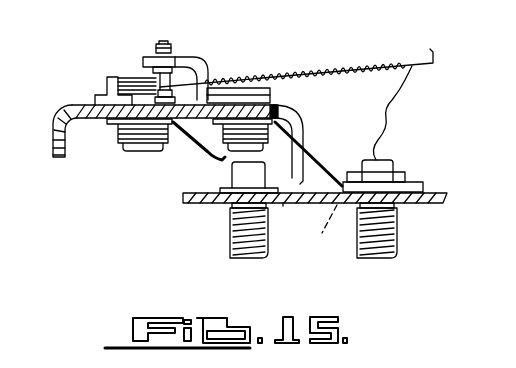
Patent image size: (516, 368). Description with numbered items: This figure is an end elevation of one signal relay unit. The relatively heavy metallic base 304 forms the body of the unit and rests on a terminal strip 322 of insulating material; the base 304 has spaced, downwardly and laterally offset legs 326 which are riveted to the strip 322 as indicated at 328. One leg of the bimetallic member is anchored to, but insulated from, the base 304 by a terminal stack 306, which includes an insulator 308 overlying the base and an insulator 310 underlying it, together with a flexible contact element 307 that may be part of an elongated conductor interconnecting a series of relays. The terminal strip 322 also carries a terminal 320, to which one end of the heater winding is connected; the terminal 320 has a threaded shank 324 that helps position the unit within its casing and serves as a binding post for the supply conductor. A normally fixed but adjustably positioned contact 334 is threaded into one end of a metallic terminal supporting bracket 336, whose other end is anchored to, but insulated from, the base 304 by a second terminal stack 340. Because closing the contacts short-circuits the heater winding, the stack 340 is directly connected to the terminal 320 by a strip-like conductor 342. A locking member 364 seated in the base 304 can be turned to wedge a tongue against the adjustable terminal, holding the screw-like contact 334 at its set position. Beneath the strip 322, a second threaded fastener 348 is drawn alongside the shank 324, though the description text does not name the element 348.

The base 304 is at (93, 127).
The terminal stack 306 is at (128, 78).
The flexible contact element 307 is at (182, 147).
The insulator 308 is at (274, 100).
The insulator 310 is at (279, 120).
The terminal 320 is at (394, 163).
The terminal strip 322 is at (449, 193).
The threaded shank 324 is at (395, 231).
The legs 326 is at (283, 204).
The rivets 328 is at (329, 230).
The adjustable contact 334 is at (166, 44).
The terminal supporting bracket 336 is at (203, 64).
The terminal stack 340 is at (243, 150).
The strip-like conductor 342 is at (310, 156).
The mounting screw 348 is at (228, 231).
The locking member 364 is at (99, 86).